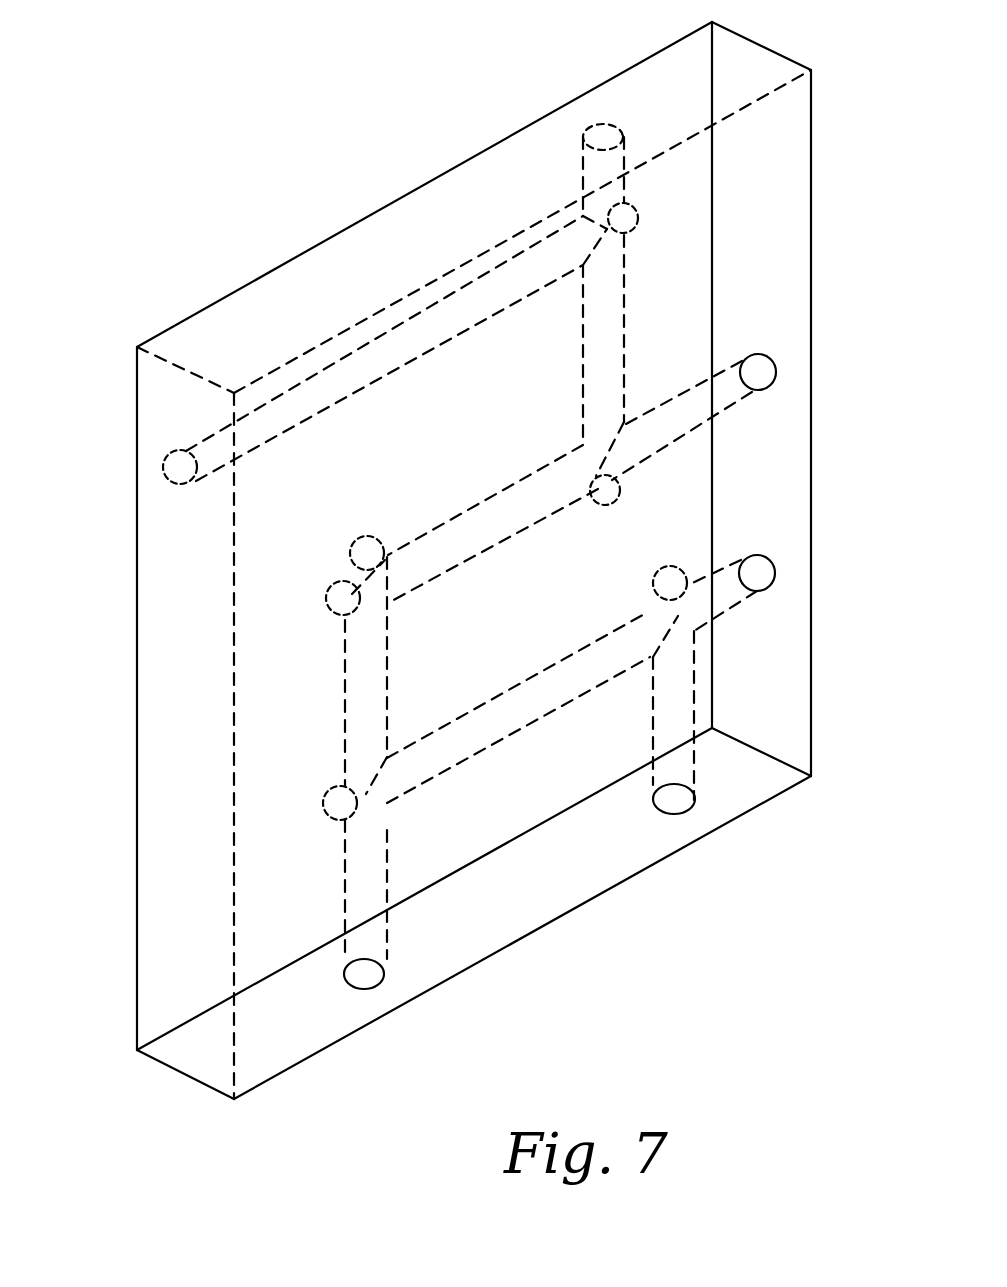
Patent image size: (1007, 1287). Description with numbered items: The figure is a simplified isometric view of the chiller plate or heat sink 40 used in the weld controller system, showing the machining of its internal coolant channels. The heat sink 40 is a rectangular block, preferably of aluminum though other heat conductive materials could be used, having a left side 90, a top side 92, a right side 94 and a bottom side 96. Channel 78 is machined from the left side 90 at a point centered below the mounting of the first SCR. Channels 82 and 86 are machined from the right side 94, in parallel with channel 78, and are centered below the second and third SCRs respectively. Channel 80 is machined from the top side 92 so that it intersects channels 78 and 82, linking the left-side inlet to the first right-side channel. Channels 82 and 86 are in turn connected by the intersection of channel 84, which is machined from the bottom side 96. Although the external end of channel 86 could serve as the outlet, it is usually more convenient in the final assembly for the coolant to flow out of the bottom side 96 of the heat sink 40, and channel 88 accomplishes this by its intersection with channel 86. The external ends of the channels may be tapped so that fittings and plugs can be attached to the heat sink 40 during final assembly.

The chiller plate 40 is at (471, 560).
The channel 78 is at (163, 478).
The channel 80 is at (600, 126).
The channel 82 is at (757, 370).
The channel 84 is at (368, 978).
The channel 86 is at (757, 575).
The channel 88 is at (674, 801).
The left side 90 is at (169, 664).
The top side 92 is at (423, 228).
The right side 94 is at (773, 203).
The bottom side 96 is at (532, 887).